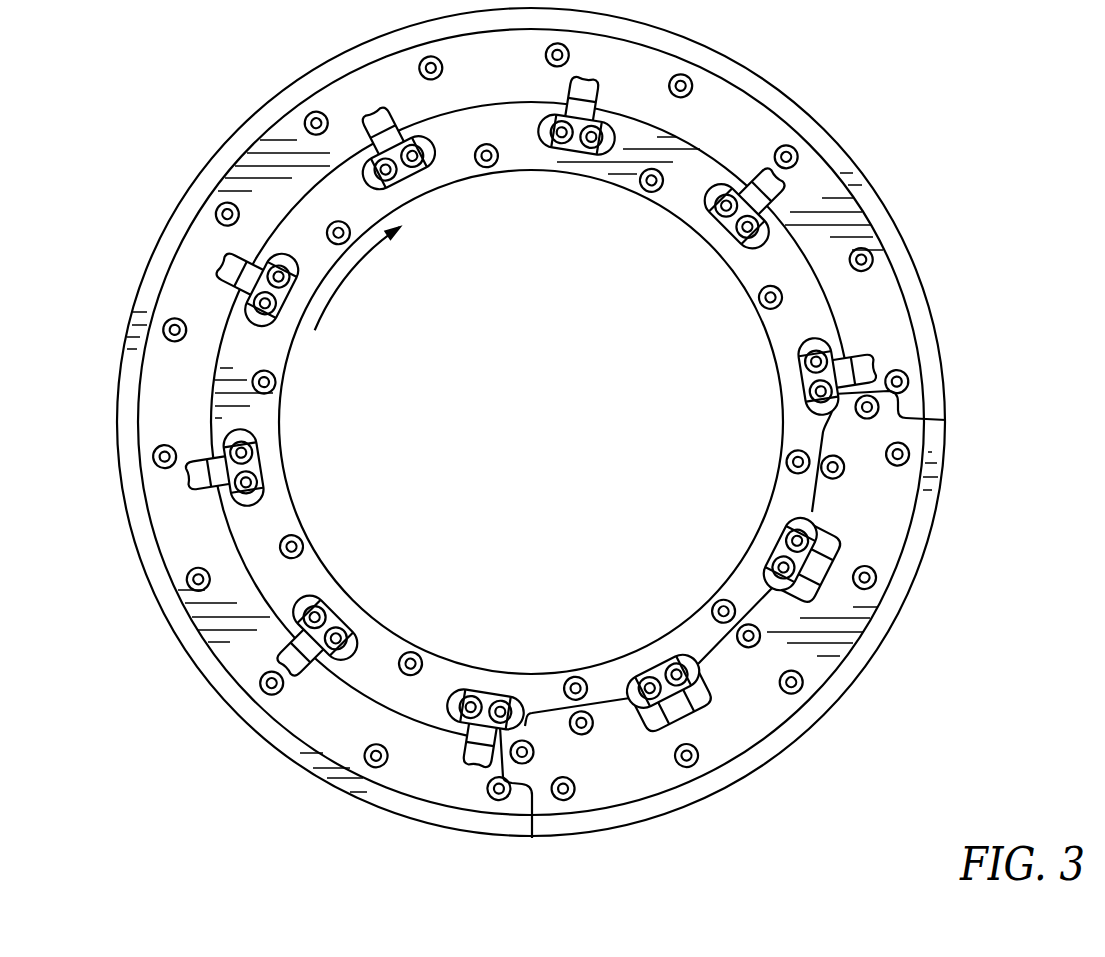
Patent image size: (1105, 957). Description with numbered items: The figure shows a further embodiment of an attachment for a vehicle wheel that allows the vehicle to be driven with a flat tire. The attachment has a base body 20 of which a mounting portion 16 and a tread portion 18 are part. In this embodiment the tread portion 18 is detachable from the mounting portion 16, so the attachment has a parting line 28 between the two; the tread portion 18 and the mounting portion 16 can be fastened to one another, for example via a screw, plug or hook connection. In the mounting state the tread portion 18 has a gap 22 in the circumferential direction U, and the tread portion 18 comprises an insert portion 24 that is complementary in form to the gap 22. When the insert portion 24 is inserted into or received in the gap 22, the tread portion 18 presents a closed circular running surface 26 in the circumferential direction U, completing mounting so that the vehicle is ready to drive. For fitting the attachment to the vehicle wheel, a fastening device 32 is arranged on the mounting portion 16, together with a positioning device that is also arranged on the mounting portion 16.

The mounting portion 16 is at (380, 665).
The tread portion 18 is at (242, 620).
The base body 20 is at (880, 328).
The gap 22 is at (937, 572).
The insert portion 24 is at (761, 770).
The closed circular running surface 26 is at (823, 142).
The parting line 28 is at (238, 379).
The fastening device 32 is at (188, 497).
The circumferential direction U is at (357, 297).